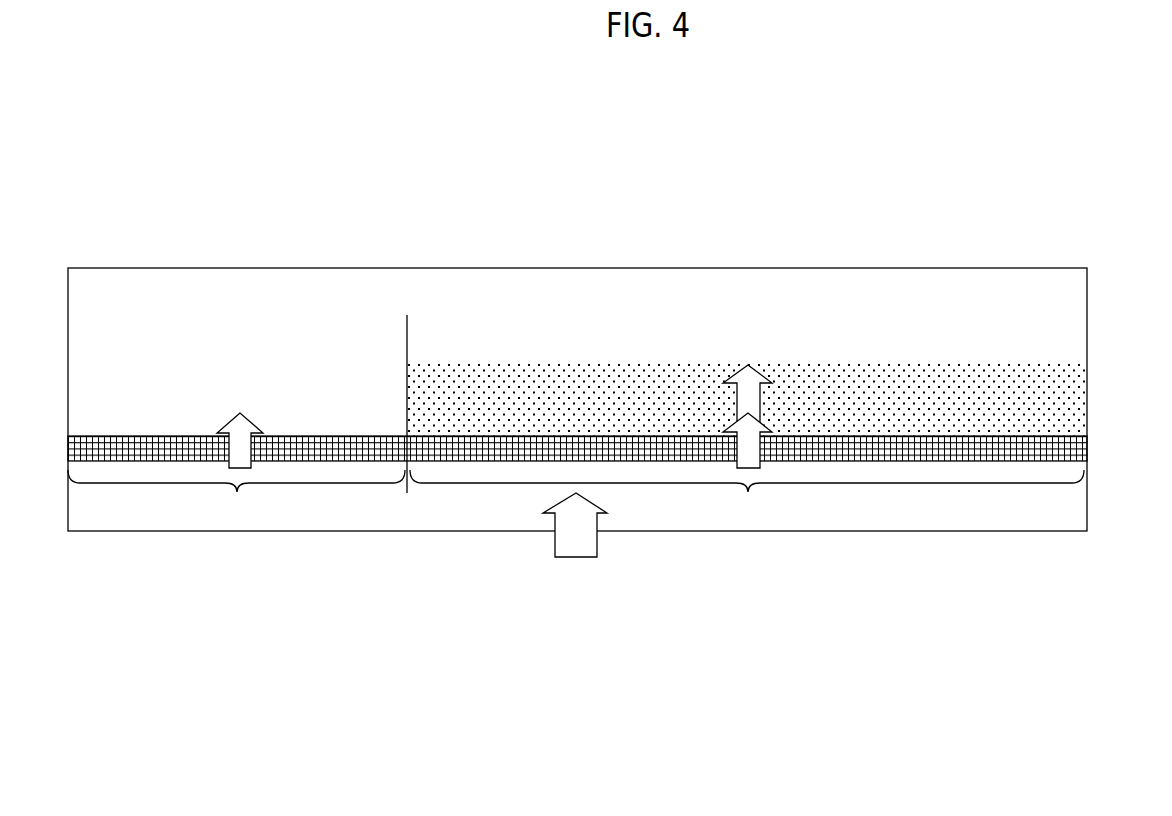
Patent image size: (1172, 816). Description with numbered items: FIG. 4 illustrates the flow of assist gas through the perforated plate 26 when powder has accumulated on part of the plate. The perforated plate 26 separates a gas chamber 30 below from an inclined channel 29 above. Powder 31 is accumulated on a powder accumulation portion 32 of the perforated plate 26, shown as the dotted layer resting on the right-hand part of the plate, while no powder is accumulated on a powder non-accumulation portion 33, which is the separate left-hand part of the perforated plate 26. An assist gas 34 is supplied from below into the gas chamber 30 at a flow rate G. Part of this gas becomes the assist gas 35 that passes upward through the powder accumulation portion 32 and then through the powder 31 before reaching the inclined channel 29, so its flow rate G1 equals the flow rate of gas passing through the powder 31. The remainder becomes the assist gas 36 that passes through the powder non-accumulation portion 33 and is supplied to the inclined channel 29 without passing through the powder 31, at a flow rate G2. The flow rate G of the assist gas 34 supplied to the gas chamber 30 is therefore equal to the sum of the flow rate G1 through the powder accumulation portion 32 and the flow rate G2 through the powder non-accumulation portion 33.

The perforated plate 26 is at (1072, 443).
The inclined channel 29 is at (935, 295).
The gas chamber 30 is at (1070, 502).
The powder 31 is at (1070, 388).
The powder accumulation portion 32 is at (747, 498).
The powder non-accumulation portion 33 is at (237, 420).
The assist gas 34 is at (574, 559).
The assist gas 35 is at (770, 430).
The assist gas 36 is at (231, 411).